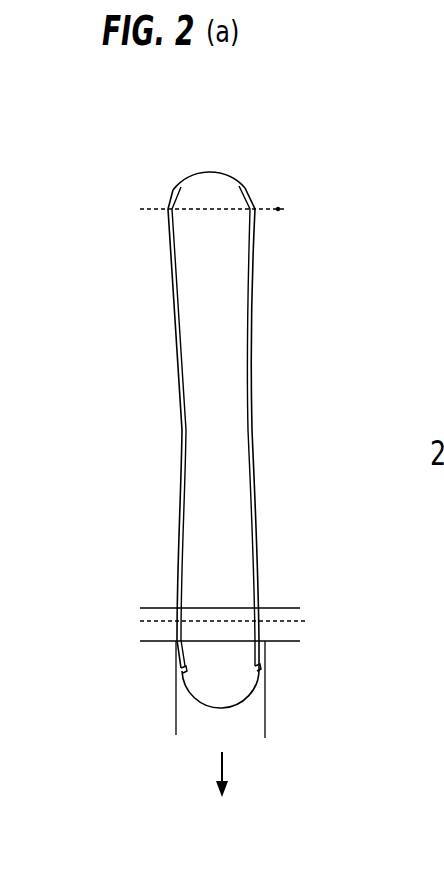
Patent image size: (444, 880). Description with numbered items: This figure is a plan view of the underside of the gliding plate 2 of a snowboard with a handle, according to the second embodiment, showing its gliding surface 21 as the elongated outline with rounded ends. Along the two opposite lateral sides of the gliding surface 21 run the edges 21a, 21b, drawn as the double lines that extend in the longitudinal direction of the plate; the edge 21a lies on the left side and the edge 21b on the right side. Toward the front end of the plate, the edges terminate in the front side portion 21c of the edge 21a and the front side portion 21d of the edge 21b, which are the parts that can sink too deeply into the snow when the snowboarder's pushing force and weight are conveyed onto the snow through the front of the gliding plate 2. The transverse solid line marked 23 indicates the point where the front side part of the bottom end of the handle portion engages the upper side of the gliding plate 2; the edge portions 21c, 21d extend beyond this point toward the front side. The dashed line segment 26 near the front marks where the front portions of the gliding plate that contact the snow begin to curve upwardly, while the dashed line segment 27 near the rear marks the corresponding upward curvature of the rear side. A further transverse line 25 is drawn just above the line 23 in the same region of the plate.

The gliding plate 2 is at (250, 408).
The gliding surface 21 is at (222, 423).
The edge 21a is at (182, 471).
The edge 21b is at (253, 497).
The front side portion of the edge 21c is at (175, 655).
The front side portion of the edge 21d is at (261, 668).
The point of engagement of the handle portion 23 is at (285, 643).
The upper reference line 25 is at (273, 607).
The line segment 26 is at (293, 621).
The line segment 27 is at (278, 209).